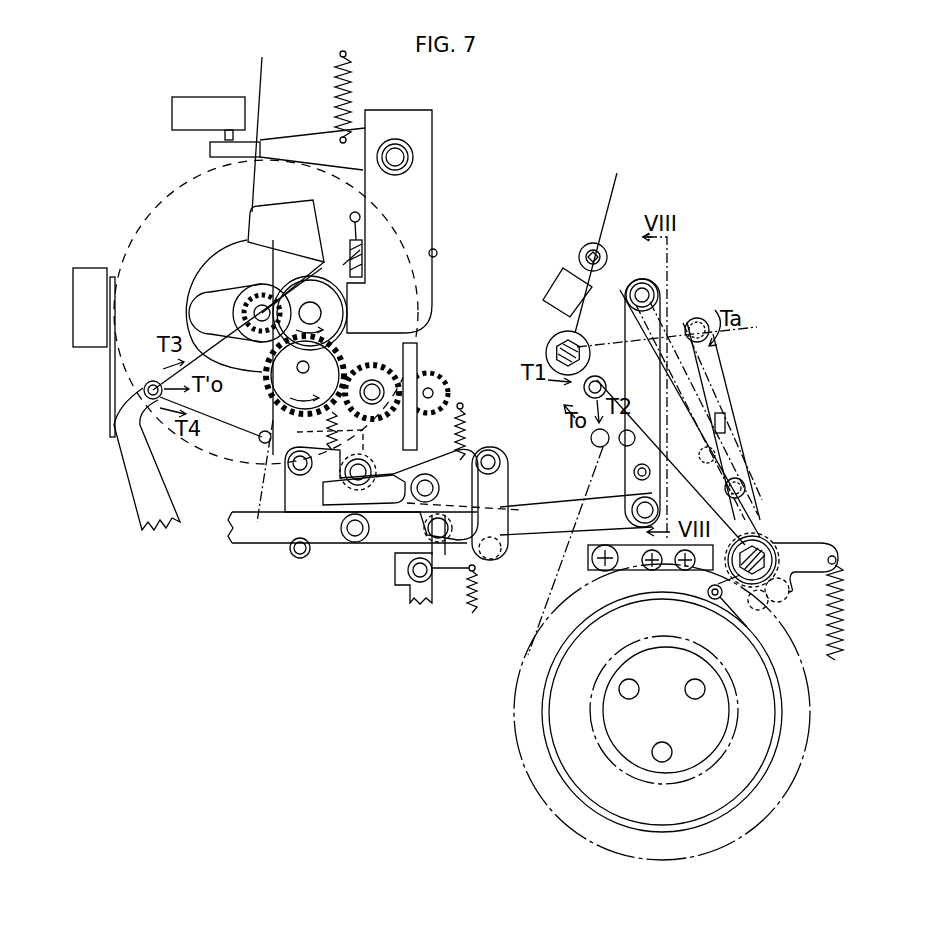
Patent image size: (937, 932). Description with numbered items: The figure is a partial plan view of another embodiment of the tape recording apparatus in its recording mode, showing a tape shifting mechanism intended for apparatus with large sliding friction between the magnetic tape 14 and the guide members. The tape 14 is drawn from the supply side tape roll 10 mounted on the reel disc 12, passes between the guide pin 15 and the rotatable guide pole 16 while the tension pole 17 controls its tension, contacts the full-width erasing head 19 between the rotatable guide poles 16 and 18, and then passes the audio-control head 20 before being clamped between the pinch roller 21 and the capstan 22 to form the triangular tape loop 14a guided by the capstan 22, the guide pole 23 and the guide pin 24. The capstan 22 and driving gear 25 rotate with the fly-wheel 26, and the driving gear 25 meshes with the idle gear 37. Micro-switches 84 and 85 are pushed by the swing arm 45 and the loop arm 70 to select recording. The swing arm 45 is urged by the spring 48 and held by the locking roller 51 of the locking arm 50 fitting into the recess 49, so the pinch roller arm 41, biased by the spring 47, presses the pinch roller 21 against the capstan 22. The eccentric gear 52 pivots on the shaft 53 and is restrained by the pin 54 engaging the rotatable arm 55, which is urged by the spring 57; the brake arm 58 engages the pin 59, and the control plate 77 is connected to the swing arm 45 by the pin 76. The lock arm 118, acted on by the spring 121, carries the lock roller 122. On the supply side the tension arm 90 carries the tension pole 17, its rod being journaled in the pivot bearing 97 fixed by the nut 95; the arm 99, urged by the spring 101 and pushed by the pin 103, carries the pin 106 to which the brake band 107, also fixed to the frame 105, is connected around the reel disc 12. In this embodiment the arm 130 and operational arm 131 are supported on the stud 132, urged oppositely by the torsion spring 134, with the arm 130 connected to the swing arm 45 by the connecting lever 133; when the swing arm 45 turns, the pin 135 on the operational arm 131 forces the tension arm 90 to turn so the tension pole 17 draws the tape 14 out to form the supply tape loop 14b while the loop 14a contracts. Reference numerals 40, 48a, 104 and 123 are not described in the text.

The supply side tape roll 10 is at (755, 827).
The reel disc 12 is at (752, 760).
The magnetic tape 14 is at (264, 72).
The triangular tape loop 14a is at (193, 356).
The supply tape loop 14b is at (715, 373).
The guide pin 15 is at (590, 436).
The rotatable guide pole 16 is at (548, 344).
The tension pole 17 is at (583, 390).
The rotatable guide pole 18 is at (585, 240).
The full-width erasing head 19 is at (562, 268).
The audio-control head 20 is at (278, 210).
The pinch roller 21 is at (303, 293).
The capstan 22 is at (252, 302).
The guide pole 23 is at (148, 383).
The guide pin 24 is at (259, 437).
The driving gear 25 is at (217, 289).
The fly-wheel 26 is at (124, 252).
The idle gear 37 is at (259, 373).
The pivot pin 40 is at (402, 157).
The pinch roller arm 41 is at (423, 110).
The swing arm 45 is at (302, 138).
The spring 47 is at (437, 245).
The spring 48 is at (349, 82).
The spring strip 48a is at (110, 395).
The recess 49 is at (357, 480).
The locking arm 50 is at (290, 490).
The locking roller 51 is at (367, 465).
The eccentric gear 52 is at (425, 364).
The shaft 53 is at (361, 397).
The pin 54 is at (433, 392).
The rotatable arm 55 is at (413, 336).
The spring 57 is at (350, 234).
The brake arm 58 is at (408, 594).
The pin 59 is at (427, 528).
The loop arm 70 is at (123, 468).
The pin 76 is at (357, 542).
The control plate 77 is at (250, 541).
The micro-switch 84 is at (73, 306).
The micro-switch 85 is at (196, 98).
The tension arm 90 is at (757, 500).
The nut 95 is at (781, 544).
The pivot bearing 97 is at (758, 548).
The arm 99 is at (838, 556).
The spring 101 is at (842, 595).
The pin 103 is at (770, 602).
The roller 104 is at (790, 593).
The frame 105 is at (700, 534).
The pin 106 is at (710, 598).
The brake band 107 is at (781, 731).
The lock arm 118 is at (507, 462).
The spring 121 is at (468, 409).
The lock roller 122 is at (417, 490).
The roller 123 is at (635, 437).
The arm 130 is at (632, 489).
The operational arm 131 is at (624, 338).
The stud 132 is at (655, 291).
The connecting lever 133 is at (543, 536).
The torsion spring 134 is at (674, 313).
The pin 135 is at (633, 470).